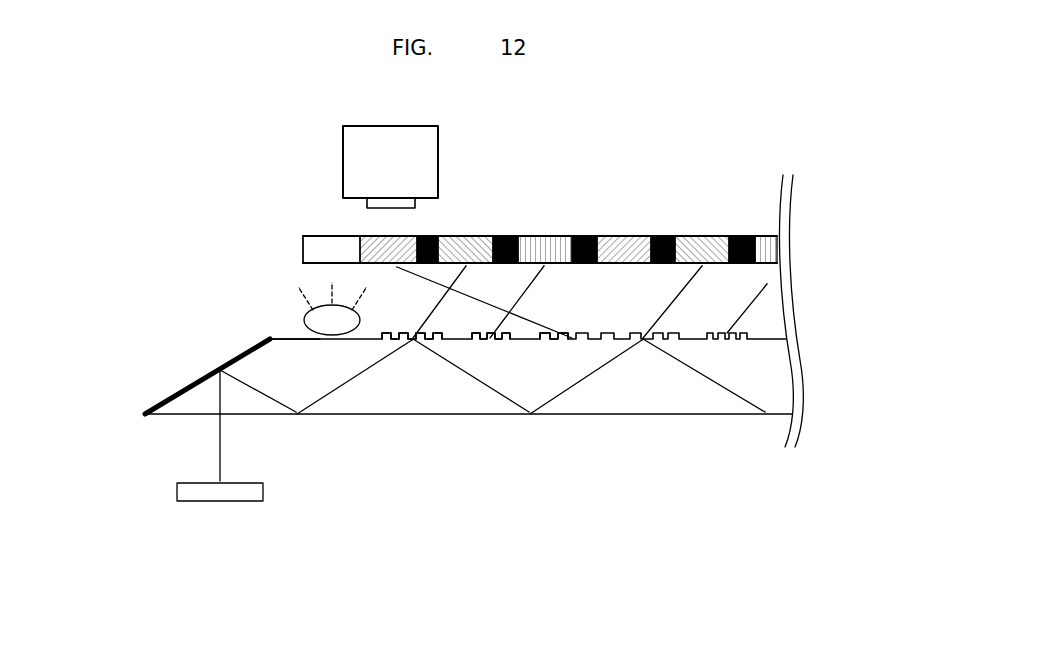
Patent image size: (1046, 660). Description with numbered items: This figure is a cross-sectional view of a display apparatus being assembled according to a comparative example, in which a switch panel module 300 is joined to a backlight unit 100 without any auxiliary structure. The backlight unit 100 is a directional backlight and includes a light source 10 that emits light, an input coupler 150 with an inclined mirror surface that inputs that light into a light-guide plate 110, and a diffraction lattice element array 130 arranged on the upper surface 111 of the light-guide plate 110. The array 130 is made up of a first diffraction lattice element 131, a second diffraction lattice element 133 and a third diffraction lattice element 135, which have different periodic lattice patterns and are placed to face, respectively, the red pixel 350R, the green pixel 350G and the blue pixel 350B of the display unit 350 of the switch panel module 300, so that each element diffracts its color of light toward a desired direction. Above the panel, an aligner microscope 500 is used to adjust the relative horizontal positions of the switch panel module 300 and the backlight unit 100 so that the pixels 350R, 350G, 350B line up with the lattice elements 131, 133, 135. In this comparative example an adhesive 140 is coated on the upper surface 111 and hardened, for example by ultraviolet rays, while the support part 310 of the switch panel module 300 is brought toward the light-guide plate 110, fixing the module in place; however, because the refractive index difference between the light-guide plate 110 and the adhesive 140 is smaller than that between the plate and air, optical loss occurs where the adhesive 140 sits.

The light source 10 is at (237, 501).
The backlight unit 100 is at (512, 370).
The light-guide plate 110 is at (782, 378).
The upper surface 111 is at (296, 340).
The diffraction lattice element array 130 is at (481, 421).
The first diffraction lattice element 131 is at (567, 343).
The second diffraction lattice element 133 is at (424, 343).
The third diffraction lattice element 135 is at (490, 343).
The adhesive 140 is at (312, 319).
The input coupler 150 is at (180, 401).
The switch panel module 300 is at (539, 218).
The support part 310 is at (325, 240).
The display unit 350 is at (623, 218).
The green pixel 350G is at (472, 240).
The blue pixel 350B is at (548, 242).
The red pixel 350R is at (630, 242).
The aligner microscope 500 is at (348, 160).